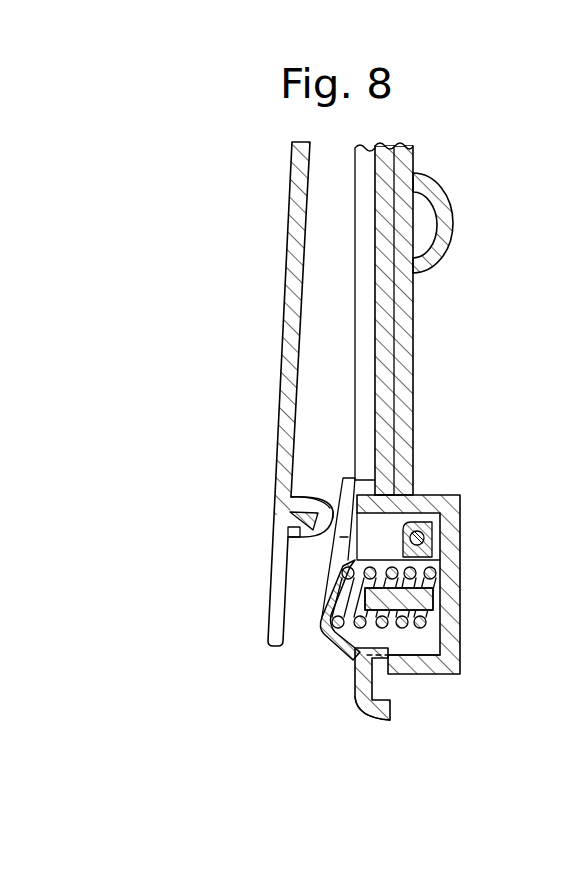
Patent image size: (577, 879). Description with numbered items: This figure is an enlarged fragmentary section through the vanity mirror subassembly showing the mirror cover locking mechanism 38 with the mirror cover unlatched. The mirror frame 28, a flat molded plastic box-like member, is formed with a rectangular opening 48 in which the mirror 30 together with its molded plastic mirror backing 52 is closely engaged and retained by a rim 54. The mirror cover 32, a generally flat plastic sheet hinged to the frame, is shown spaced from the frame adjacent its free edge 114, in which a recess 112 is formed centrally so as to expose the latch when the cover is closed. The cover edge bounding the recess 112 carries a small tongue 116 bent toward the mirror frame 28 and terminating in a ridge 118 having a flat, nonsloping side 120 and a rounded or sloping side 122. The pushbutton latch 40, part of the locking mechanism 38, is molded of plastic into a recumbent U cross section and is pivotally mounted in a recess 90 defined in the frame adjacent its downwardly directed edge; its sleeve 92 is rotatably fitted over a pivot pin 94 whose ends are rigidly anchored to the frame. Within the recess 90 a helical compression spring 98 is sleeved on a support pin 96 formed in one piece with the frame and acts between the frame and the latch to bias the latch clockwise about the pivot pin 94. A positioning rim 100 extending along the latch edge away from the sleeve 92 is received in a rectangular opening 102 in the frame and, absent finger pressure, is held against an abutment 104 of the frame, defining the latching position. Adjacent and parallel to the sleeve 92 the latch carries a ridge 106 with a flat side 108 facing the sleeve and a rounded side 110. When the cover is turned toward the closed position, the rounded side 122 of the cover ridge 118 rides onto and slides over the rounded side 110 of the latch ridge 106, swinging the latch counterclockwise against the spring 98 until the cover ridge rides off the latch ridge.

The mirror frame 28 is at (357, 210).
The mirror 30 is at (377, 300).
The mirror cover 32 is at (287, 283).
The mirror backing 52 is at (414, 302).
The rim 54 is at (378, 486).
The opening 48 is at (376, 478).
The rounded side 110 is at (341, 508).
The ridge 106 is at (340, 537).
The flat side 108 is at (360, 525).
The sleeve 92 is at (456, 508).
The pivot pin 94 is at (426, 537).
The recess 90 is at (437, 557).
The helical compression spring 98 is at (430, 648).
The opening 102 is at (418, 675).
The positioning rim 100 is at (386, 676).
The abutment 104 is at (358, 700).
The support pin 96 is at (335, 650).
The locking mechanism 38 is at (322, 655).
The pushbutton latch 40 is at (318, 633).
The free edge 114 is at (278, 645).
The recess 112 is at (280, 530).
The tongue 116 is at (306, 512).
The ridge 118 is at (292, 545).
The flat side 120 is at (303, 532).
The rounded side 122 is at (290, 497).